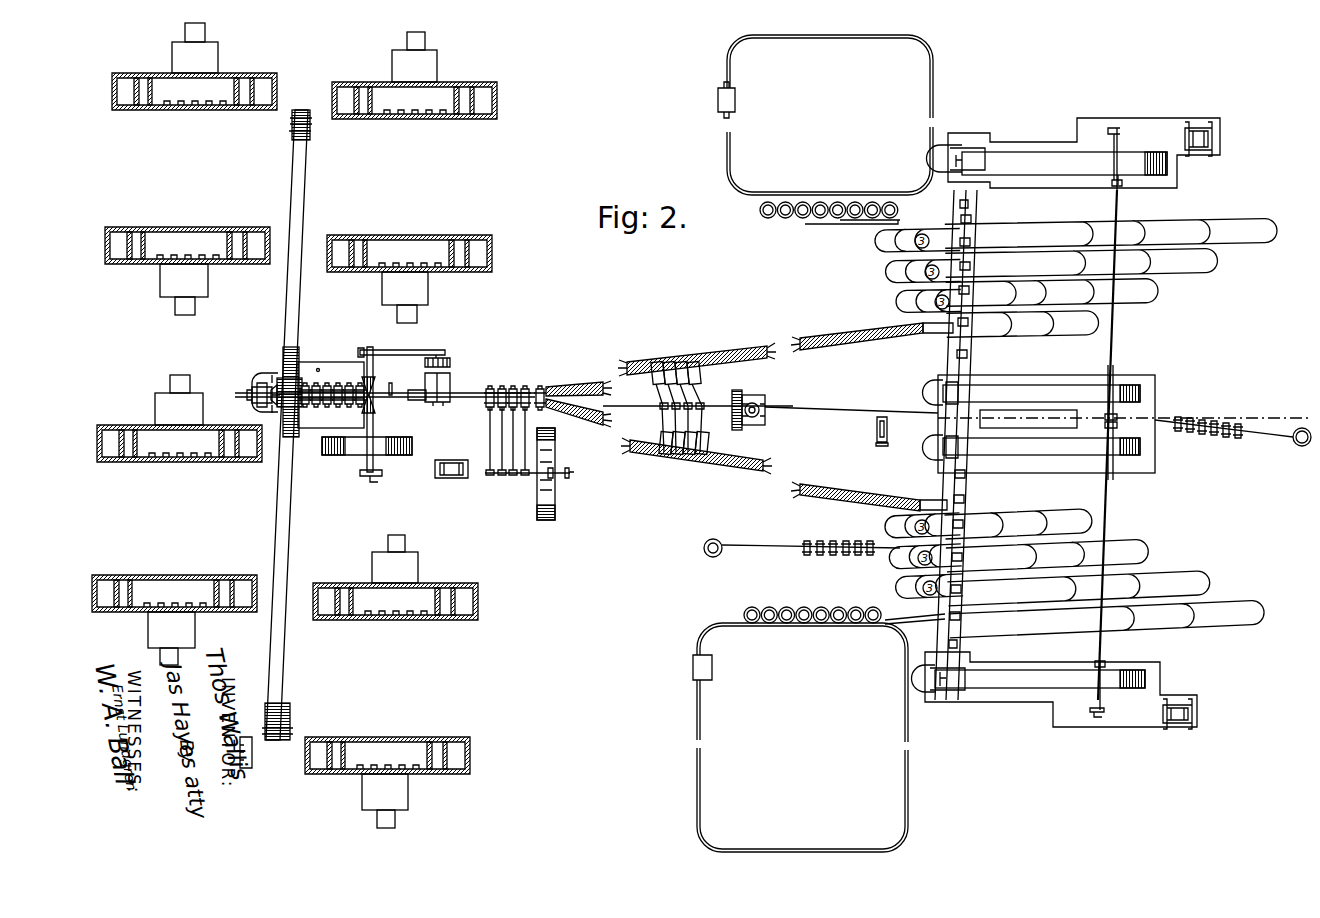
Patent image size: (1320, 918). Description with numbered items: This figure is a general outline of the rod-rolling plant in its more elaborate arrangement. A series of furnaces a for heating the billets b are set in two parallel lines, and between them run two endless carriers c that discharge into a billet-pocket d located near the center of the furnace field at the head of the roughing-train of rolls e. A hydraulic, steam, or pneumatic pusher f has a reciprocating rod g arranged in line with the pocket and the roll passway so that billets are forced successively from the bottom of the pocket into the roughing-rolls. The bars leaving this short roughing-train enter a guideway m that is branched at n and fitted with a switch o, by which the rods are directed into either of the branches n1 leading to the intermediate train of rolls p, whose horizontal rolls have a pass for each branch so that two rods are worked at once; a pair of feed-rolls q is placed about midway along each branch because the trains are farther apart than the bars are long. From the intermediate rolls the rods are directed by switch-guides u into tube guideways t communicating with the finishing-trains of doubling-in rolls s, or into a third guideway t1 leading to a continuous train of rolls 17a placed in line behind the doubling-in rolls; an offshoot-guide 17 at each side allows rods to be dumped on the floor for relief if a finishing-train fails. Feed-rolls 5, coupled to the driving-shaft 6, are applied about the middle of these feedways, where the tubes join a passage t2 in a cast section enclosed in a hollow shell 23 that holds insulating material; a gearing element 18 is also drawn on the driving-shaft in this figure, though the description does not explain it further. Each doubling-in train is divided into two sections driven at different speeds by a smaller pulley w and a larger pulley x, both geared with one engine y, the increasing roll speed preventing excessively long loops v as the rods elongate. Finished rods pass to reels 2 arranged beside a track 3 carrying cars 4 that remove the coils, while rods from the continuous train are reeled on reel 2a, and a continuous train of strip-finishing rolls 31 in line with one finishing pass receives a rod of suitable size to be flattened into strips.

The furnaces a is at (252, 755).
The billets b is at (293, 403).
The endless carriers c is at (293, 546).
The billet-pocket d is at (272, 406).
The roughing-train of rolls e is at (328, 380).
The pusher f is at (252, 402).
The reciprocating rod g is at (272, 378).
The guideway m is at (375, 398).
The branch n is at (385, 398).
The branches of guideway n1 is at (417, 405).
The switch o is at (391, 393).
The feed-rolls q is at (438, 402).
The intermediate train of rolls p is at (507, 390).
The switch-guides u is at (540, 407).
The offshoot-guide 17 is at (562, 410).
The guideways t is at (798, 474).
The third guideway t1 is at (830, 411).
The passage t2 is at (620, 410).
The feed-rolls 5 is at (881, 417).
The hollow shell 23 is at (707, 471).
The driving-shaft 6 is at (689, 418).
The gear box 18 is at (753, 400).
The reels 2 is at (884, 620).
The track 3 is at (705, 690).
The cars 4 is at (693, 661).
The finishing-trains of doubling-in rolls s is at (969, 494).
The loops v is at (1174, 624).
The driving-pulley w is at (1154, 456).
The driving-pulley x is at (1162, 676).
The engine y is at (1171, 727).
The continuous train of rolls 17a is at (1214, 420).
The reel 2a is at (1299, 445).
The strip-finishing rolls 31 is at (858, 556).